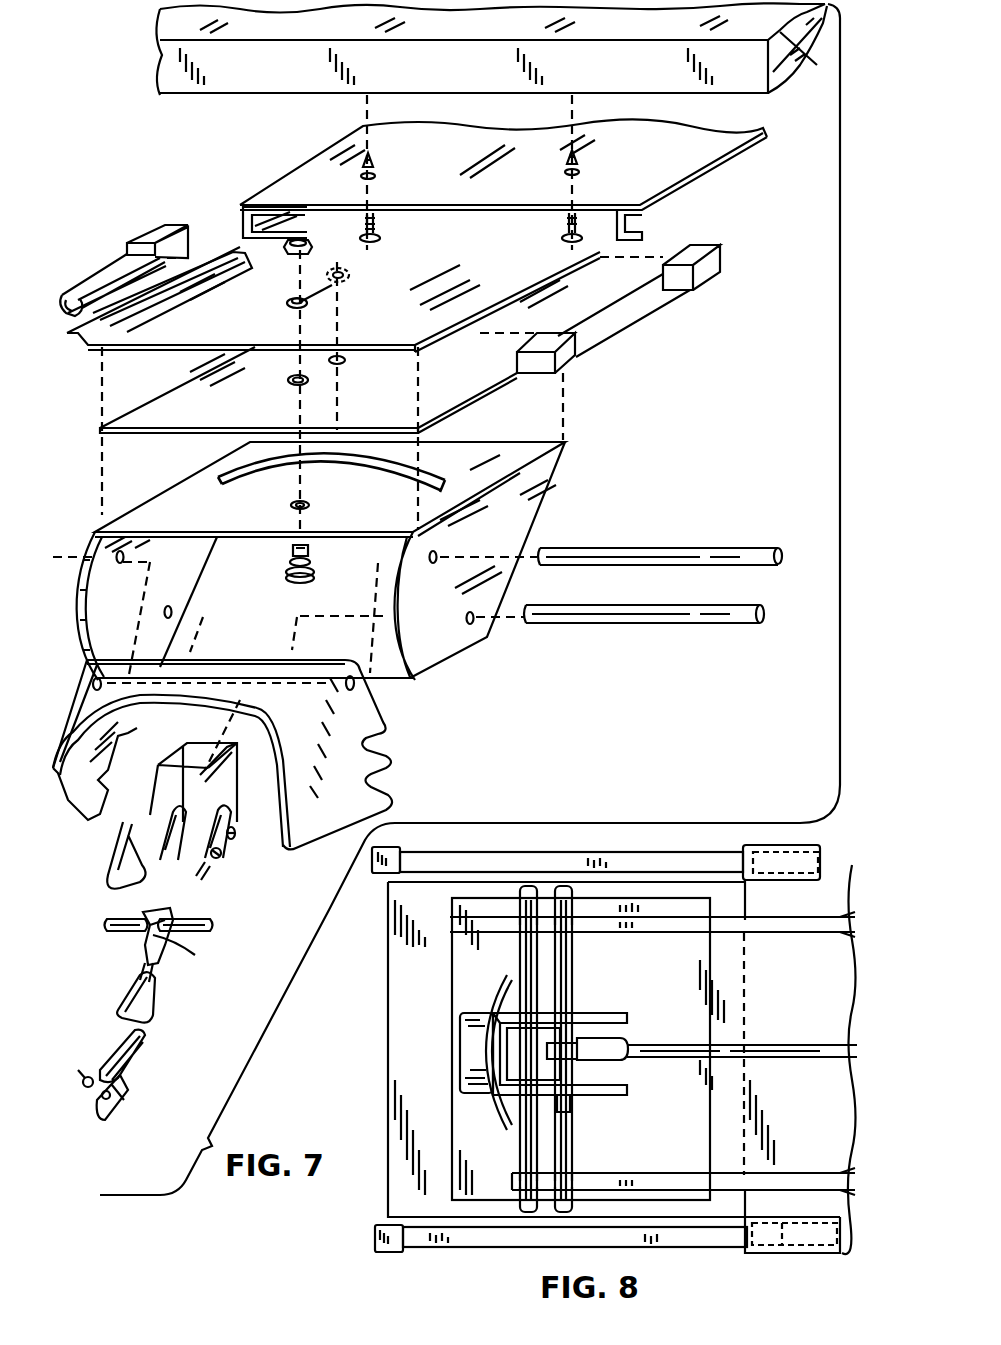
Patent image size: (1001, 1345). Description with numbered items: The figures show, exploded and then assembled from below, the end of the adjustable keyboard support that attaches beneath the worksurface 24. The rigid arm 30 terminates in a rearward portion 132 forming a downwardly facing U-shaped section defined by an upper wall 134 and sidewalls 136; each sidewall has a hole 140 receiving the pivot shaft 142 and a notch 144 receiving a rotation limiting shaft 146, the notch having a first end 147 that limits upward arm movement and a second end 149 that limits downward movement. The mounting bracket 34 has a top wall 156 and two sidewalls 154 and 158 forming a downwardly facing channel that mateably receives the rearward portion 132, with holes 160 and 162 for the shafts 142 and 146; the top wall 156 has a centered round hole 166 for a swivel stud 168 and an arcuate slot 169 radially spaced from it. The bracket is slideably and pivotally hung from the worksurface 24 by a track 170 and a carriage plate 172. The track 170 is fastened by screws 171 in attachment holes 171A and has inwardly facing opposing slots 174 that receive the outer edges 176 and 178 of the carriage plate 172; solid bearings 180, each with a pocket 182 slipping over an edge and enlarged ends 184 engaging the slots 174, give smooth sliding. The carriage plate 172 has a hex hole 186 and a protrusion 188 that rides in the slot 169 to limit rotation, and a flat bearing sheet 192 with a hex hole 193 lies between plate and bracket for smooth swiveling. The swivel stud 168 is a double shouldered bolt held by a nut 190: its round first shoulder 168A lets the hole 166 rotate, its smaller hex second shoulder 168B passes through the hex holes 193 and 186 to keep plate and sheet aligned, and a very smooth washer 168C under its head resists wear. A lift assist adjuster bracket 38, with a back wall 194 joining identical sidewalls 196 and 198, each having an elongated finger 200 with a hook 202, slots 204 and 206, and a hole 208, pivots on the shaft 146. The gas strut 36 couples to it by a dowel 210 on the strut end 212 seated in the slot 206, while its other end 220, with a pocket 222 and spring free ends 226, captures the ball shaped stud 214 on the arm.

In FIG. 7, the worksurface 24 is at (725, 72).
In FIG. 7, the rigid arm 30 is at (345, 808).
In FIG. 8, the rigid arm 30 is at (856, 920).
In FIG. 7, the mounting bracket 34 is at (585, 460).
In FIG. 8, the mounting bracket 34 is at (662, 910).
In FIG. 7, the gas strut 36 is at (112, 951).
In FIG. 8, the gas strut 36 is at (850, 1053).
In FIG. 7, the lift assist adjuster bracket 38 is at (95, 860).
In FIG. 8, the lift assist adjuster bracket 38 is at (602, 1003).
In FIG. 7, the rearward portion 132 is at (395, 782).
In FIG. 7, the upper wall 134 is at (283, 672).
In FIG. 8, the upper wall 134 is at (700, 1015).
In FIG. 7, the sidewalls 136 is at (346, 667).
In FIG. 8, the sidewalls 136 is at (848, 928).
In FIG. 7, the hole 140 is at (358, 686).
In FIG. 7, the pivot shaft 142 is at (628, 552).
In FIG. 8, the pivot shaft 142 is at (570, 1140).
In FIG. 7, the notch 144 is at (372, 752).
In FIG. 7, the rotation limiting shaft 146 is at (632, 606).
In FIG. 8, the rotation limiting shaft 146 is at (522, 964).
In FIG. 7, the first end 147 is at (378, 740).
In FIG. 7, the second end 149 is at (376, 796).
In FIG. 7, the sidewall 154 is at (530, 495).
In FIG. 7, the top wall 156 is at (183, 492).
In FIG. 8, the top wall 156 is at (457, 973).
In FIG. 7, the sidewall 158 is at (208, 575).
In FIG. 7, the hole 160 is at (121, 563).
In FIG. 7, the hole 162 is at (170, 609).
In FIG. 7, the centered round hole 166 is at (312, 502).
In FIG. 7, the swivel stud 168 is at (325, 592).
In FIG. 7, the first shoulder 168A is at (290, 574).
In FIG. 7, the second shoulder 168B is at (295, 553).
In FIG. 7, the washer 168C is at (295, 588).
In FIG. 7, the arcuate slot 169 is at (440, 477).
In FIG. 8, the arcuate slot 169 is at (503, 1125).
In FIG. 7, the track 170 is at (720, 207).
In FIG. 8, the track 170 is at (797, 840).
In FIG. 7, the screws 171 is at (382, 236).
In FIG. 7, the attachment holes 171A is at (376, 170).
In FIG. 7, the carriage plate 172 is at (565, 278).
In FIG. 8, the carriage plate 172 is at (388, 973).
In FIG. 7, the slots 174 is at (258, 230).
In FIG. 7, the outer edge 176 is at (547, 262).
In FIG. 7, the outer edge 178 is at (210, 248).
In FIG. 7, the solid bearings 180 is at (118, 262).
In FIG. 8, the solid bearings 180 is at (531, 858).
In FIG. 7, the pocket 182 is at (105, 292).
In FIG. 7, the enlarged ends 184 is at (170, 225).
In FIG. 8, the enlarged ends 184 is at (410, 849).
In FIG. 7, the hex hole 186 is at (308, 300).
In FIG. 7, the protrusion 188 is at (350, 272).
In FIG. 7, the nut 190 is at (310, 242).
In FIG. 7, the flat bearing sheet 192 is at (490, 393).
In FIG. 7, the hex hole 193 is at (288, 383).
In FIG. 7, the back wall 194 is at (163, 740).
In FIG. 8, the back wall 194 is at (467, 1057).
In FIG. 7, the sidewall 196 is at (130, 834).
In FIG. 7, the sidewall 198 is at (233, 763).
In FIG. 7, the elongated finger 200 is at (192, 921).
In FIG. 7, the hook 202 is at (150, 896).
In FIG. 7, the slot 204 is at (222, 856).
In FIG. 7, the slot 206 is at (198, 875).
In FIG. 7, the hole 208 is at (232, 840).
In FIG. 7, the dowel 210 is at (187, 933).
In FIG. 8, the dowel 210 is at (573, 1103).
In FIG. 7, the gas strut end 212 is at (160, 952).
In FIG. 8, the gas strut end 212 is at (623, 1062).
In FIG. 7, the ball shaped stud 214 is at (107, 1070).
In FIG. 7, the end 220 is at (160, 1093).
In FIG. 7, the pocket 222 is at (102, 1108).
In FIG. 7, the free ends 226 is at (84, 1088).